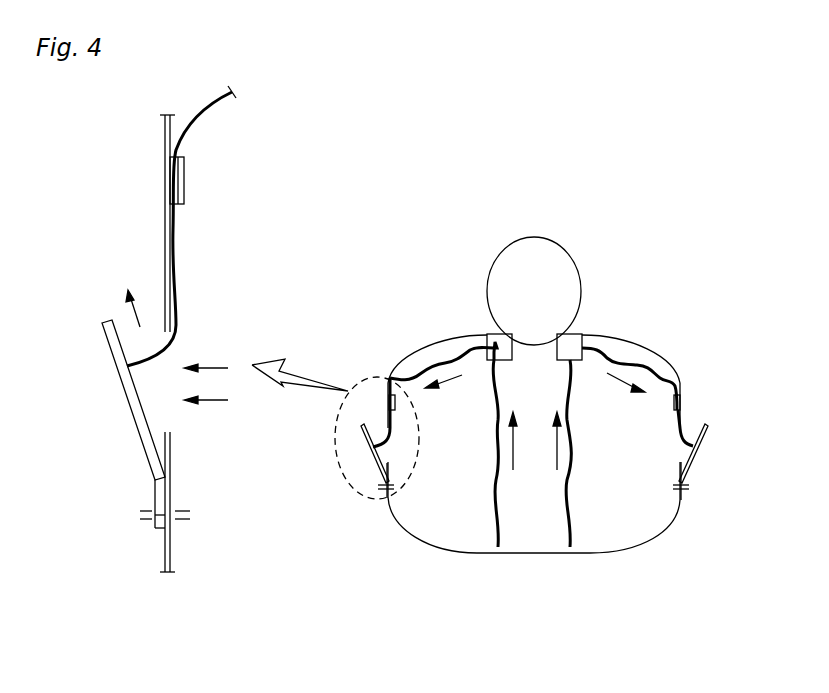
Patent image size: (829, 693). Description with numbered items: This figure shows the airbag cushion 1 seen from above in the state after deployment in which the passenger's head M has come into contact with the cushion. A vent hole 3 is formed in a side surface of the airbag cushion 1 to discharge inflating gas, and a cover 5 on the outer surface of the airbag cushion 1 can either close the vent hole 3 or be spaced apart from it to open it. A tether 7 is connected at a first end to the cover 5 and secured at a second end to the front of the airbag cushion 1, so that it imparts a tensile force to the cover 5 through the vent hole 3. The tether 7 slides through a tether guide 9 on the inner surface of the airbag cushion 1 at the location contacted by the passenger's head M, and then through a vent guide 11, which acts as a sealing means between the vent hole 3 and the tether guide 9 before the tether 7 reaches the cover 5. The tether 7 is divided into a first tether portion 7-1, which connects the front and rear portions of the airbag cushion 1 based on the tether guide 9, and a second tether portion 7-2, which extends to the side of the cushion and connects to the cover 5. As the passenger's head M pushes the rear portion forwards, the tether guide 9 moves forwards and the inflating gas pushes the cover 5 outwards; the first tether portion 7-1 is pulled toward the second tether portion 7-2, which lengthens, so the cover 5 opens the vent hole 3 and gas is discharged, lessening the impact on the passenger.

The airbag cushion 1 is at (165, 253).
The vent hole 3 is at (165, 388).
The cover 5 is at (137, 428).
The tether 7 is at (210, 118).
The first tether portion 7-1 is at (573, 507).
The second tether portion 7-2 is at (437, 362).
The tether guide 9 is at (582, 337).
The vent guide 11 is at (184, 181).
The passenger's head M is at (562, 272).